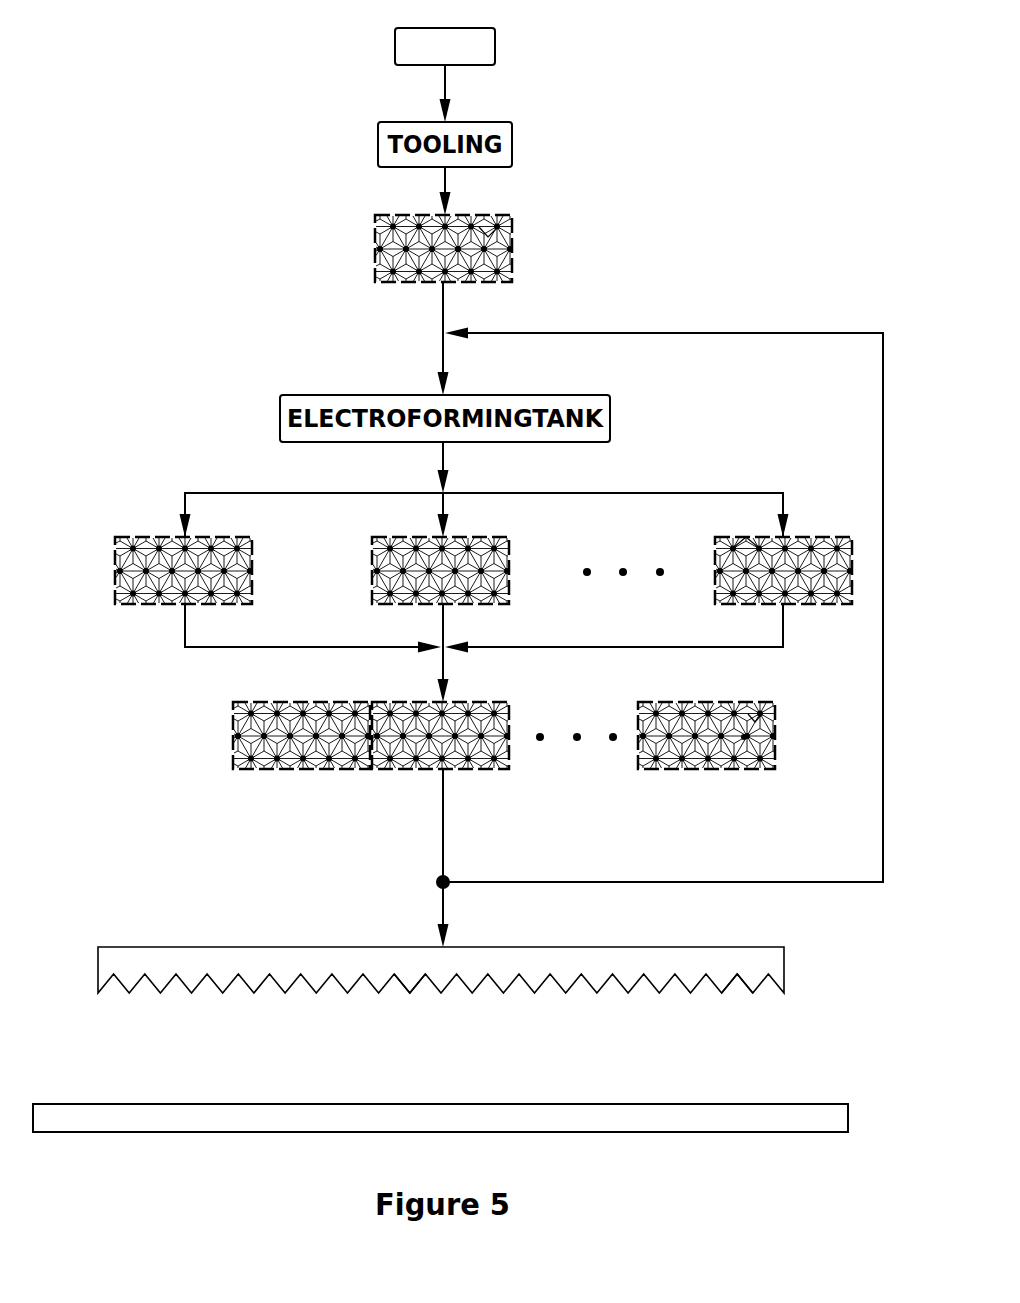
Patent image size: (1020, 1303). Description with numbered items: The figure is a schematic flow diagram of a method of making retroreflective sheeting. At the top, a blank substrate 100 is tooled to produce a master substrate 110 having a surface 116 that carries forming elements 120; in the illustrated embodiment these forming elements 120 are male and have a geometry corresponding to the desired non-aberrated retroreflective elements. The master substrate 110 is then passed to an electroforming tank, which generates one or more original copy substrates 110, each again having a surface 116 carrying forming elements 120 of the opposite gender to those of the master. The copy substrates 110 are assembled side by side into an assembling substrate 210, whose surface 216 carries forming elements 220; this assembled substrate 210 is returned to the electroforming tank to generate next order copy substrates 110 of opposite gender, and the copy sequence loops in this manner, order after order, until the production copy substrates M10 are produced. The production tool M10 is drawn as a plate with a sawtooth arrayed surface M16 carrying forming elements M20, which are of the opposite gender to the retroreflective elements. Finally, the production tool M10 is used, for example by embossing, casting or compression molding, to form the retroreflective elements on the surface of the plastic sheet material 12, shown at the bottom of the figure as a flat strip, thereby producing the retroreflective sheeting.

The blank substrate 100 is at (496, 50).
The master substrate 110 is at (353, 240).
The surface 116 is at (492, 250).
The forming elements 120 is at (510, 237).
The assembling substrate 210 is at (210, 740).
The surface of assembling substrate 216 is at (767, 746).
The forming elements of assembled substrate 220 is at (777, 722).
The production tool M10 is at (75, 958).
The arrayed surface M16 is at (746, 1011).
The forming elements of production tool M20 is at (393, 1014).
The plastic sheet material 12 is at (652, 1113).